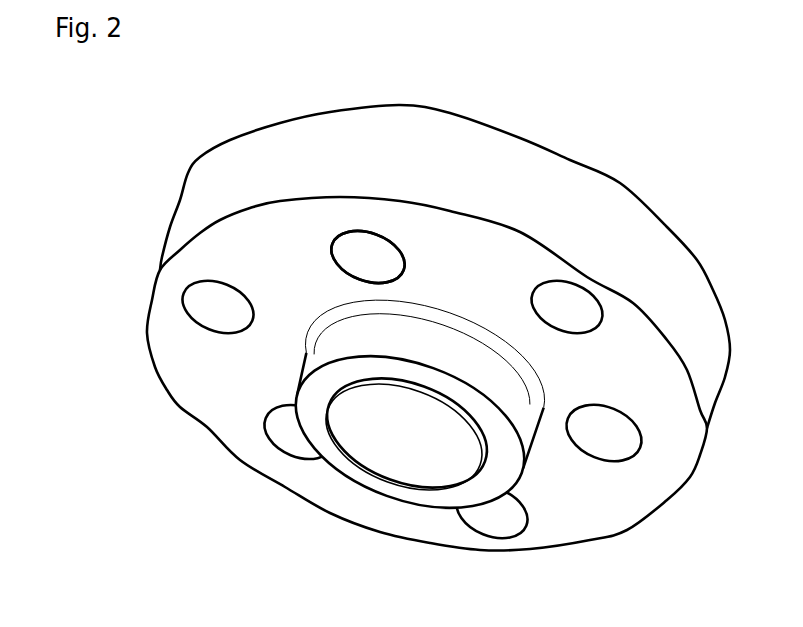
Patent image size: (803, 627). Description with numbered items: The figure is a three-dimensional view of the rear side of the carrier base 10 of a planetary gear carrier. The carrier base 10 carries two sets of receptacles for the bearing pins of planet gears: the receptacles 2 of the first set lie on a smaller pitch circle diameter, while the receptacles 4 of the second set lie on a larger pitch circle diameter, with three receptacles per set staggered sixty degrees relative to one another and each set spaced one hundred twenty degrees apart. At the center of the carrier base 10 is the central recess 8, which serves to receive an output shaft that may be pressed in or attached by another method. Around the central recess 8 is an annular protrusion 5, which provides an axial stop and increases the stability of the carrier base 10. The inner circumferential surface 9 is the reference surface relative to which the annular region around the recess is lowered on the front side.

The carrier base 10 is at (678, 162).
The receptacles of the first set 2 is at (396, 245).
The inner circumferential surface 9 is at (360, 262).
The receptacles of the second set 4 is at (580, 302).
The annular protrusion 5 is at (315, 388).
The central recess 8 is at (393, 447).